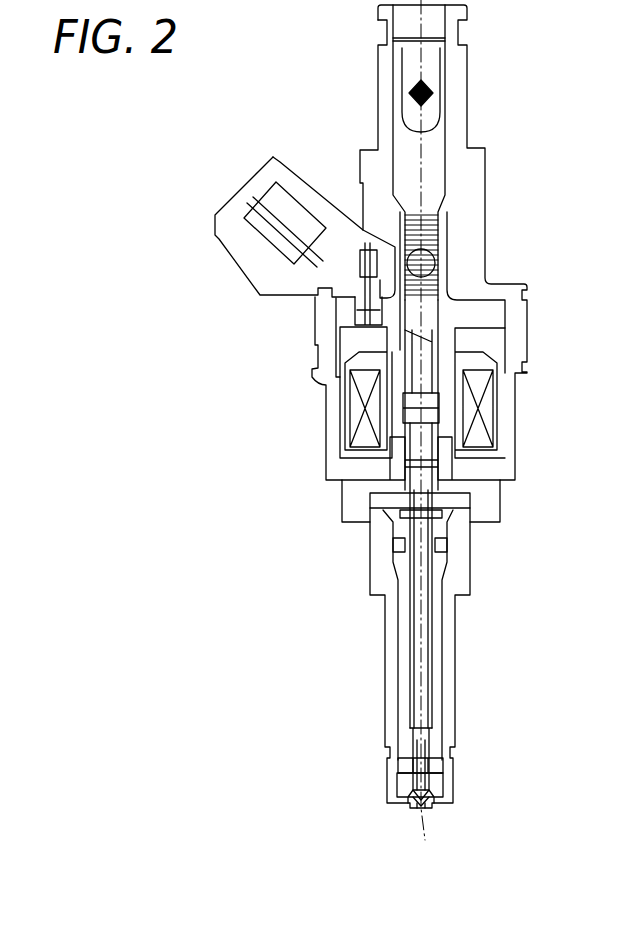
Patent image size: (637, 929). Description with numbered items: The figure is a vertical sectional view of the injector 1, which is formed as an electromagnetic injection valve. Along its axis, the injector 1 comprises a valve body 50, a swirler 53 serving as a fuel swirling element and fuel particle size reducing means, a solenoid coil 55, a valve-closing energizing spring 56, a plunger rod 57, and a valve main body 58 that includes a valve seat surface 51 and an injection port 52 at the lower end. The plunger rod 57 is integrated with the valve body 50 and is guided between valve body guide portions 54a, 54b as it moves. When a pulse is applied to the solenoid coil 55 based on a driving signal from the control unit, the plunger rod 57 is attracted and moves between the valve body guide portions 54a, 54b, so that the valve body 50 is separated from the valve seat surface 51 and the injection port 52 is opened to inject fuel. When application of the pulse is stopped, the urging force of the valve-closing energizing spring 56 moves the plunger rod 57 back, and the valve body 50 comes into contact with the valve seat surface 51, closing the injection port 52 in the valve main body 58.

The injector 1 is at (532, 184).
The valve body 50 is at (430, 733).
The valve seat surface 51 is at (438, 797).
The injection port 52 is at (425, 840).
The swirler 53 is at (443, 783).
The valve body guide portion 54a is at (438, 768).
The valve body guide portion 54b is at (447, 545).
The solenoid coil 55 is at (478, 432).
The valve-closing energizing spring 56 is at (437, 408).
The plunger rod 57 is at (432, 640).
The valve main body 58 is at (370, 566).